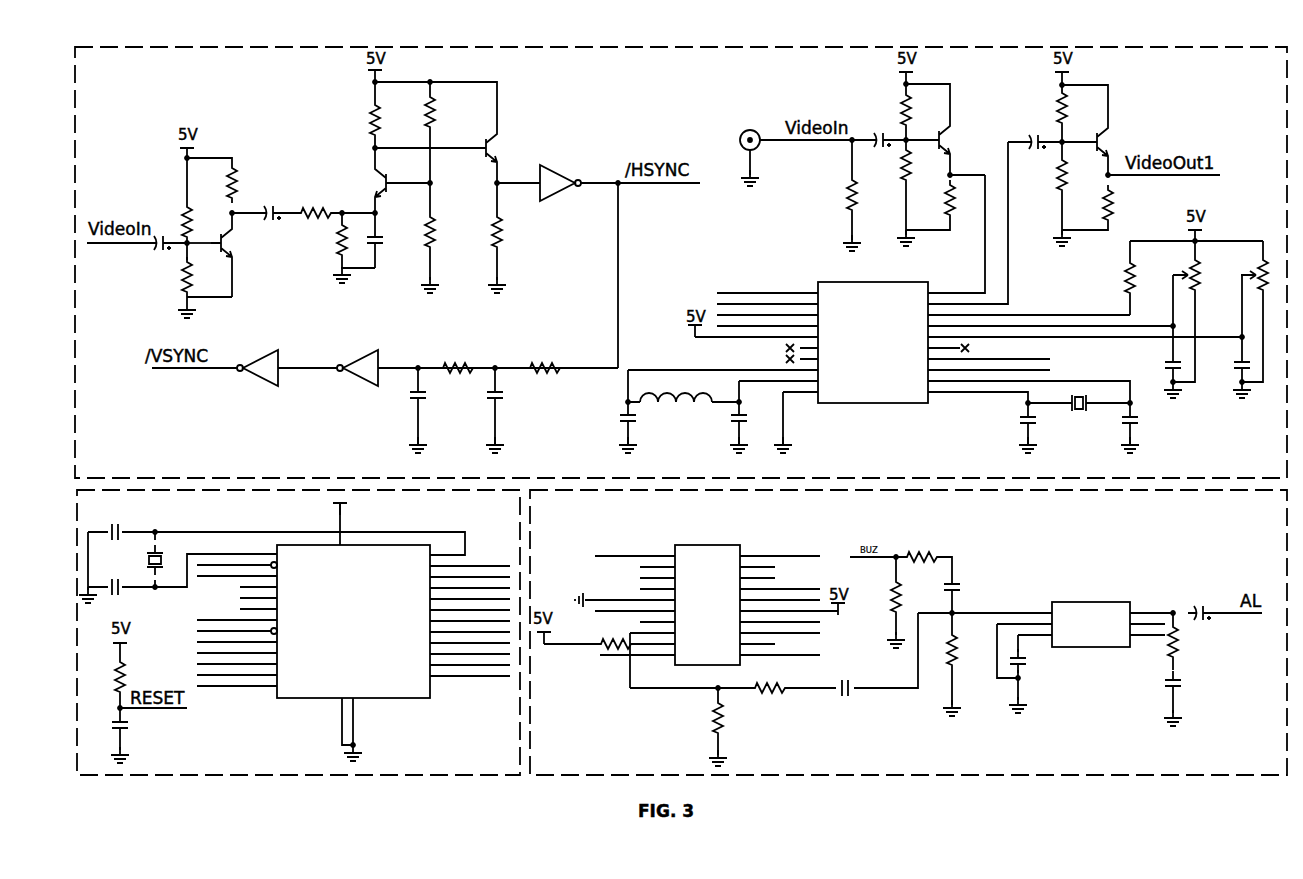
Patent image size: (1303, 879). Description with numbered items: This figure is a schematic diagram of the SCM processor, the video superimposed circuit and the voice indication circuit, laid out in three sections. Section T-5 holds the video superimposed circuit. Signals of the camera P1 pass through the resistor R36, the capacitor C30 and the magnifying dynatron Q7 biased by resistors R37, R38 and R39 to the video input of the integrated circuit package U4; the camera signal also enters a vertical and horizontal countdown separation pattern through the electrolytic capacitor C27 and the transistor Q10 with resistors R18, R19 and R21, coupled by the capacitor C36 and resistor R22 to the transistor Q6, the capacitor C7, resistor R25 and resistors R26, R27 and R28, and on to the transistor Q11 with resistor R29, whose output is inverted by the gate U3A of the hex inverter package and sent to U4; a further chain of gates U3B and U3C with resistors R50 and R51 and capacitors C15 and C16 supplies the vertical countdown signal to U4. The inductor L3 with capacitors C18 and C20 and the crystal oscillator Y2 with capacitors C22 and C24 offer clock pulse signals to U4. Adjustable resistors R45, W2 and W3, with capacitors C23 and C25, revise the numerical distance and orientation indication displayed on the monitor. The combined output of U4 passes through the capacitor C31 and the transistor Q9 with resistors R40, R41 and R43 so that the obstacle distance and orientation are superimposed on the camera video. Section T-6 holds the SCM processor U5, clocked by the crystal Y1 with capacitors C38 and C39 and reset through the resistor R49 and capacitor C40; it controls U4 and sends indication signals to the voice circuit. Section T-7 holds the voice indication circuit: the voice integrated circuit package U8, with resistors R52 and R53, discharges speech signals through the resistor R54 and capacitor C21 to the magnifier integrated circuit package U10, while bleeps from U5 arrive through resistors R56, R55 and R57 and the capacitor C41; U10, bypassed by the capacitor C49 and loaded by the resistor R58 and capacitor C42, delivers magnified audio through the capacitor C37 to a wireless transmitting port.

The video superimposed circuit section T-5 is at (573, 462).
The SCM processor section T-6 is at (481, 754).
The voice indication circuit section T-7 is at (891, 764).
The resistor R18 is at (204, 212).
The resistor R19 is at (204, 277).
The resistor R21 is at (249, 182).
The resistor R22 is at (335, 201).
The resistor R25 is at (337, 240).
The resistor R26 is at (392, 120).
The resistor R27 is at (447, 112).
The resistor R28 is at (447, 232).
The resistor R29 is at (515, 232).
The capacitor C7 is at (387, 240).
The electrolytic capacitor C27 is at (137, 229).
The capacitor C36 is at (265, 202).
The transistor Q6 is at (387, 180).
The transistor Q10 is at (231, 243).
The transistor Q11 is at (505, 148).
The inverter of integrated circuit package U3 (74LS04) U3A is at (610, 181).
The inverter of integrated circuit package U3 (74LS04) U3B is at (259, 357).
The inverter of integrated circuit package U3 (74LS04) U3C is at (355, 357).
The resistor R50 is at (458, 357).
The resistor R51 is at (545, 357).
The capacitor C15 is at (437, 406).
The capacitor C16 is at (514, 406).
The capacitor C18 is at (612, 418).
The inductor L3 is at (676, 388).
The capacitor C20 is at (722, 418).
The integrated circuit package U4 (UPD6450) U4 is at (968, 286).
The camera P1 is at (749, 129).
The resistor R36 is at (833, 195).
The capacitor C30 is at (879, 128).
The resistor R37 is at (923, 110).
The resistor R38 is at (923, 165).
The resistor R39 is at (933, 200).
The dynatron Q7 is at (955, 140).
The capacitor C31 is at (1030, 129).
The resistor R40 is at (1079, 108).
The resistor R41 is at (1079, 175).
The resistor R43 is at (1125, 205).
The transistor Q9 is at (1113, 142).
The adjustable resistor R45 is at (1110, 278).
The adjustable resistor W2 is at (1200, 289).
The adjustable resistor W3 is at (1267, 294).
The capacitor C23 is at (1157, 360).
The capacitor C25 is at (1225, 360).
The crystal oscillator capacitor C22 is at (1009, 420).
The crystal oscillator Y2 is at (1079, 417).
The crystal oscillator capacitor C24 is at (1149, 420).
The capacitor C38 is at (109, 520).
The capacitor C39 is at (109, 576).
The crystal Y1 is at (144, 554).
The resistor R49 is at (138, 676).
The capacitor C40 is at (138, 726).
The SCM processor U5 (PIC16F72) U5 is at (353, 614).
The voice integrated circuit package U8 (API840) U8 is at (706, 604).
The resistor R52 is at (594, 653).
The resistor R53 is at (737, 721).
The resistor R54 is at (770, 676).
The capacitor C21 is at (845, 673).
The resistor R55 is at (878, 596).
The resistor R56 is at (922, 546).
The capacitor C41 is at (970, 587).
The resistor R57 is at (970, 650).
The magnifier integrated circuit package U10 (LM386) U10 is at (1085, 628).
The capacitor C49 is at (1034, 667).
The capacitor C37 is at (1222, 600).
The resistor R58 is at (1192, 642).
The capacitor C42 is at (1193, 683).